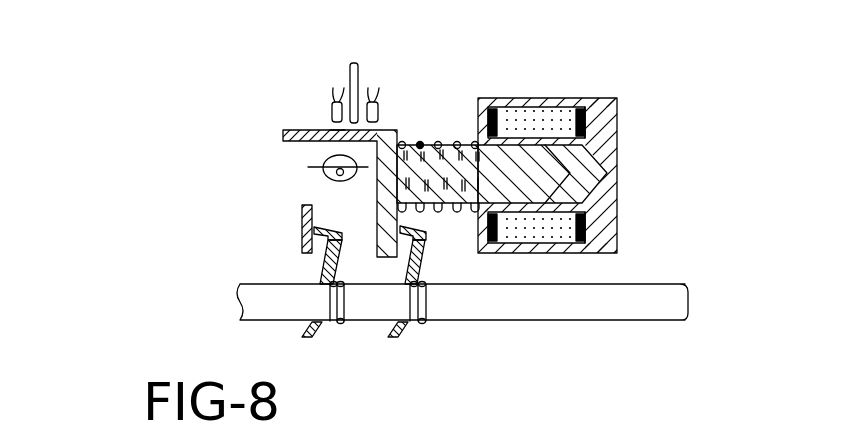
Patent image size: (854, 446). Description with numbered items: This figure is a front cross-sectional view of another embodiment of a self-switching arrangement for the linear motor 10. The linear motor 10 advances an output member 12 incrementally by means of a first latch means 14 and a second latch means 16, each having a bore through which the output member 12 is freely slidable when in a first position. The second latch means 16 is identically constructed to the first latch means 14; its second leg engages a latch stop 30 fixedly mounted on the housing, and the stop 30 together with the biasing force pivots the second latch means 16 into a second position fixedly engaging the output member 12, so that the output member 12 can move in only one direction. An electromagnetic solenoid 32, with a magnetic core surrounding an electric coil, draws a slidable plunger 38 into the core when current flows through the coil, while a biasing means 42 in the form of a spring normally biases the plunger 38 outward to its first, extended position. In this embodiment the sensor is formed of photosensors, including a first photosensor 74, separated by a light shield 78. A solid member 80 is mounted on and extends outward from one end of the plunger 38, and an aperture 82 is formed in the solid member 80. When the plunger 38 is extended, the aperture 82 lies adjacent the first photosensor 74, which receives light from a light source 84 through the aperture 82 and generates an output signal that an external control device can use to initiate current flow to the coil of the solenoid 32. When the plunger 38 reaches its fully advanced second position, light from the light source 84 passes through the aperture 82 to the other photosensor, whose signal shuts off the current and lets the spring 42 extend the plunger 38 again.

The linear motor 10 is at (567, 54).
The output member 12 is at (660, 288).
The first latch means 14 is at (426, 263).
The second latch means 16 is at (340, 265).
The latch stop 30 is at (300, 228).
The electromagnetic solenoid 32 is at (618, 100).
The plunger 38 is at (504, 153).
The biasing means 42 is at (441, 143).
The first photosensor 74 is at (335, 132).
The light shield 78 is at (352, 63).
The solid member 80 is at (284, 133).
The aperture 82 is at (335, 131).
The light source 84 is at (322, 170).